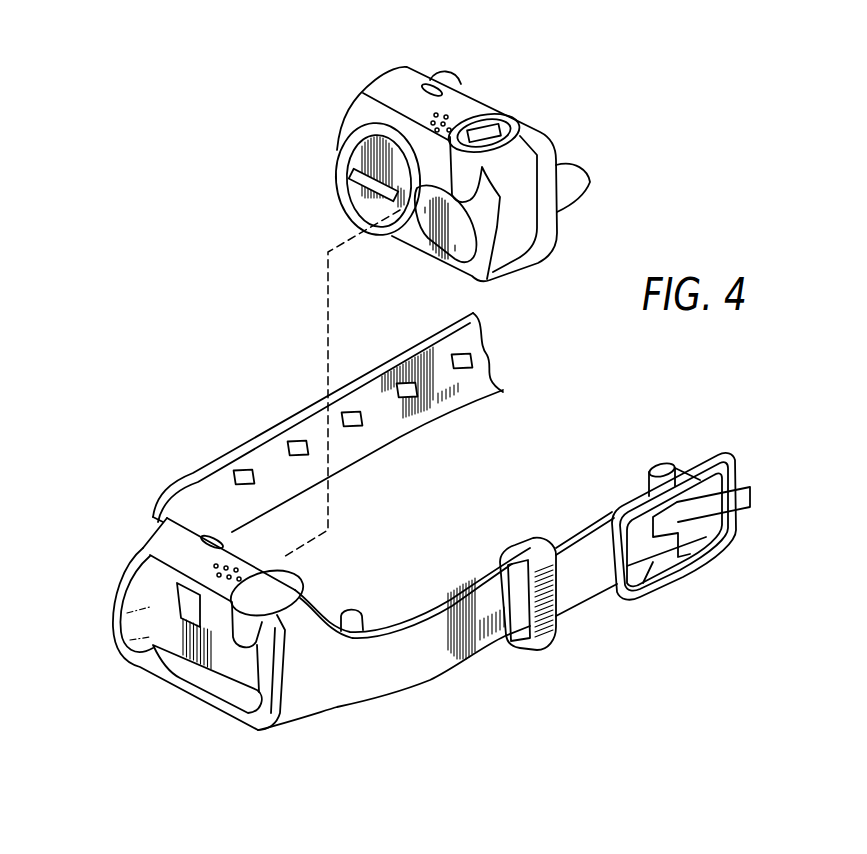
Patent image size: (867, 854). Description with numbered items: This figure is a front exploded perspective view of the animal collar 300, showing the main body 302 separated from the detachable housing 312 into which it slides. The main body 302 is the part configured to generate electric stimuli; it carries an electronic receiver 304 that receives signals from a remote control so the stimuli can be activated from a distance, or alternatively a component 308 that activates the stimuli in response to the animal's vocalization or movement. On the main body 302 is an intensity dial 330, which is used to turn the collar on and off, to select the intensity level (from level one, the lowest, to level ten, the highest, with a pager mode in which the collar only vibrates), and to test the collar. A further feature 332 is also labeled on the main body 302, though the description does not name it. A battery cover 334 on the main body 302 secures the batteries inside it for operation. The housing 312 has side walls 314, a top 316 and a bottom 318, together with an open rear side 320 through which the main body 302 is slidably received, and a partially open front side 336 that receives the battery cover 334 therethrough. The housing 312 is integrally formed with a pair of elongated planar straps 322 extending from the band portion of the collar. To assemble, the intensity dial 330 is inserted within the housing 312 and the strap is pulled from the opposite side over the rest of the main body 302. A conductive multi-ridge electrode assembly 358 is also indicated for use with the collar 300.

The animal collar 300 is at (195, 298).
The main body 302 is at (355, 73).
The electronic receiver 304 is at (407, 100).
The component 308 is at (447, 117).
The detachable housing 312 is at (223, 712).
The side walls 314 is at (117, 587).
The top 316 is at (157, 537).
The bottom 318 is at (183, 683).
The open rear side 320 is at (330, 568).
The straps 322 is at (430, 643).
The intensity dial 330 is at (487, 127).
The microphone slot 332 is at (430, 93).
The battery cover 334 is at (360, 155).
The partially open front side 336 is at (160, 653).
The conductive multi-ridge electrode assembly 358 is at (672, 115).